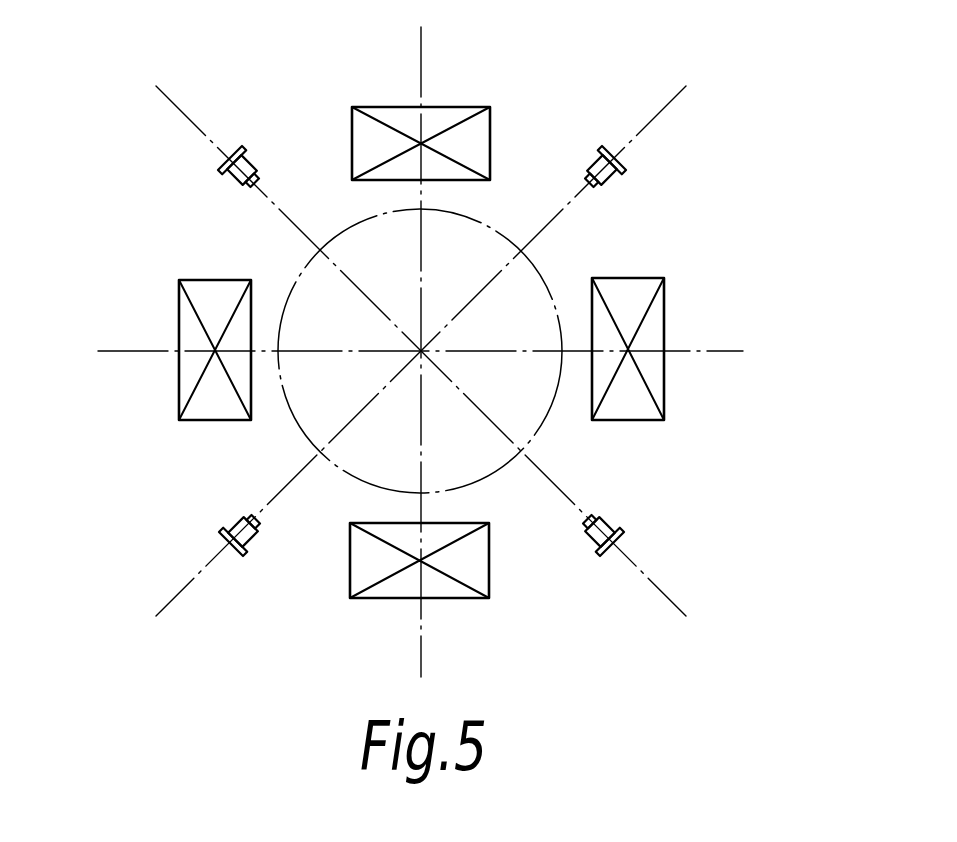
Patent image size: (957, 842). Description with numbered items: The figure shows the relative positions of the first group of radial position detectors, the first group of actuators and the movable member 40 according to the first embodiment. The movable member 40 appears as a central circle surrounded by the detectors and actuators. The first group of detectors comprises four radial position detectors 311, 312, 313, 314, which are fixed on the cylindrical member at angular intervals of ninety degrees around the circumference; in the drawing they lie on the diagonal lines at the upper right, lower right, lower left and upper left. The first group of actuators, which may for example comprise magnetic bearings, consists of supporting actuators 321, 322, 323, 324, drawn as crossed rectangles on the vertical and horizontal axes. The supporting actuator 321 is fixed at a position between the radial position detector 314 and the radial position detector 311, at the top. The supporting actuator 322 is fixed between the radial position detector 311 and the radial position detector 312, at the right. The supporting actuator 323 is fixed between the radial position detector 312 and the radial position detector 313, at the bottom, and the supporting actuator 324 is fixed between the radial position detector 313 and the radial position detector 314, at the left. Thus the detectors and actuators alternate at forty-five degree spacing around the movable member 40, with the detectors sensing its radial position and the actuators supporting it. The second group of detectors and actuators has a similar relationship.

The movable member 40 is at (361, 242).
The radial position detector 311 is at (590, 159).
The radial position detector 312 is at (608, 518).
The radial position detector 313 is at (255, 538).
The radial position detector 314 is at (240, 180).
The supporting actuator 321 is at (458, 107).
The supporting actuator 322 is at (664, 392).
The supporting actuator 323 is at (381, 598).
The supporting actuator 324 is at (179, 318).